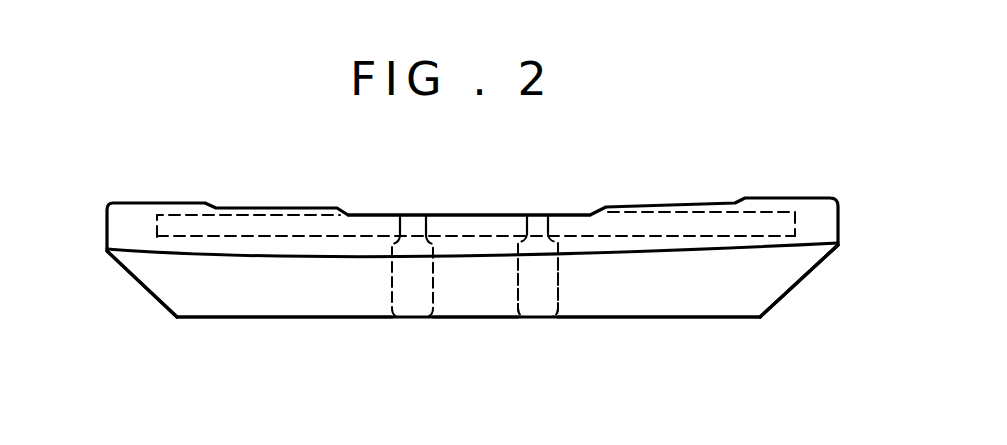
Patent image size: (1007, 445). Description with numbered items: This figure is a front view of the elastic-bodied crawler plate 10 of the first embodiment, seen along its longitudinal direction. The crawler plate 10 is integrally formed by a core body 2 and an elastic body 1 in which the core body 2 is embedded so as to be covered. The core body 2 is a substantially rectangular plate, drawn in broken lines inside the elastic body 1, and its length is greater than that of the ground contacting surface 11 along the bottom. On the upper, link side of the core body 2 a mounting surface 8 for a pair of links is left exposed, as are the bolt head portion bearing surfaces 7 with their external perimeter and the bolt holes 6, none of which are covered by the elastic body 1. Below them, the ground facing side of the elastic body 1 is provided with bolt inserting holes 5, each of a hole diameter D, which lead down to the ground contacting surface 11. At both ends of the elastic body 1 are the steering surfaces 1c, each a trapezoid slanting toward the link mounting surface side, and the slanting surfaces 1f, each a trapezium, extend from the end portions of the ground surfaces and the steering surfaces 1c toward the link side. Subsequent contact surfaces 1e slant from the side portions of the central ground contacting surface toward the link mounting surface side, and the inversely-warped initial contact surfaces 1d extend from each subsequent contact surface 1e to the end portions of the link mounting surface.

The elastic-bodied crawler plate 10 is at (838, 187).
The elastic body 1 is at (788, 268).
The steering surface 1c is at (136, 283).
The inversely-warped initial contact surface 1d is at (128, 215).
The subsequent contact surface 1e is at (478, 306).
The slanting surface 1f is at (233, 308).
The core body 2 is at (652, 222).
The bolt inserting hole 5 is at (532, 308).
The bolt hole 6 is at (535, 218).
The bolt head portion bearing surface 7 is at (420, 243).
The mounting surface 8 is at (471, 214).
The ground contacting surface 11 is at (670, 320).